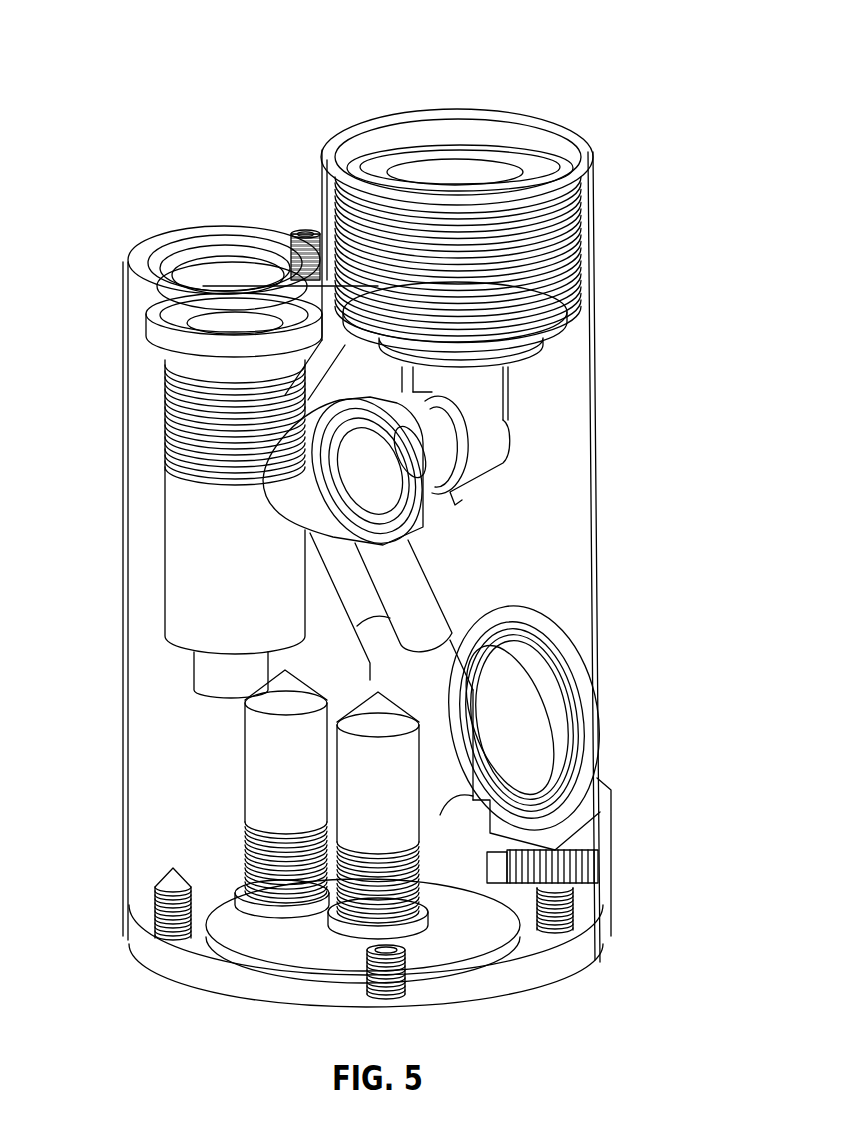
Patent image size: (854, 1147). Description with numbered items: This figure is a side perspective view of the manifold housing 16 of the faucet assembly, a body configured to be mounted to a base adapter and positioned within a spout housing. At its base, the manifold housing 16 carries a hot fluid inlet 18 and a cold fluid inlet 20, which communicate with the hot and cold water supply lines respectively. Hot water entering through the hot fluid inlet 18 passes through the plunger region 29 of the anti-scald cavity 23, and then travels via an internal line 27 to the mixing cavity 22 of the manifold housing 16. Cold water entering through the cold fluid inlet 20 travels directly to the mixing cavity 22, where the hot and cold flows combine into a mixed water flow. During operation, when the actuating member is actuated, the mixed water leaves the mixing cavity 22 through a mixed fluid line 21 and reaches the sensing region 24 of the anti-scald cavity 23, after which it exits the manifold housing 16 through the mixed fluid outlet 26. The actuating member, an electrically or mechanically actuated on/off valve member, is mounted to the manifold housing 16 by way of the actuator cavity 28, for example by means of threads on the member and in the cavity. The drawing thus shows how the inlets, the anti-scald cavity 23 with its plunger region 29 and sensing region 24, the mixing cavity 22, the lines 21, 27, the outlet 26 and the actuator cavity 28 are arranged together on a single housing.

The manifold housing 16 is at (245, 56).
The hot fluid inlet 18 is at (268, 783).
The cold fluid inlet 20 is at (396, 790).
The mixed fluid line 21 is at (403, 623).
The mixing cavity 22 is at (503, 742).
The anti-scald cavity 23 is at (243, 202).
The sensing region 24 is at (173, 339).
The mixed fluid outlet 26 is at (392, 468).
The internal line 27 is at (326, 624).
The actuator cavity 28 is at (471, 105).
The plunger region 29 is at (192, 569).